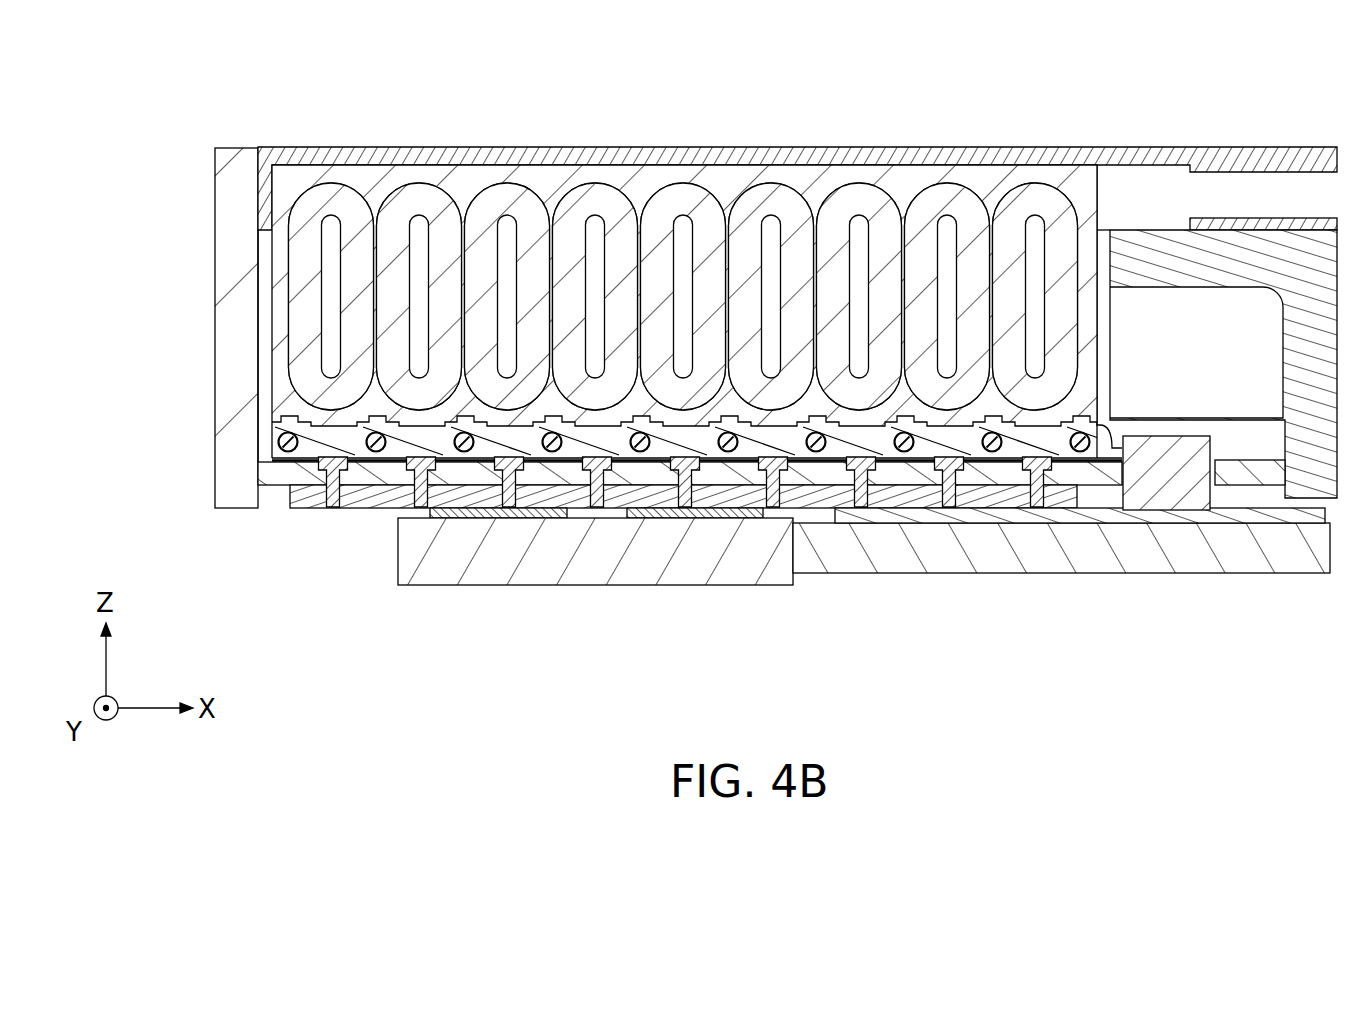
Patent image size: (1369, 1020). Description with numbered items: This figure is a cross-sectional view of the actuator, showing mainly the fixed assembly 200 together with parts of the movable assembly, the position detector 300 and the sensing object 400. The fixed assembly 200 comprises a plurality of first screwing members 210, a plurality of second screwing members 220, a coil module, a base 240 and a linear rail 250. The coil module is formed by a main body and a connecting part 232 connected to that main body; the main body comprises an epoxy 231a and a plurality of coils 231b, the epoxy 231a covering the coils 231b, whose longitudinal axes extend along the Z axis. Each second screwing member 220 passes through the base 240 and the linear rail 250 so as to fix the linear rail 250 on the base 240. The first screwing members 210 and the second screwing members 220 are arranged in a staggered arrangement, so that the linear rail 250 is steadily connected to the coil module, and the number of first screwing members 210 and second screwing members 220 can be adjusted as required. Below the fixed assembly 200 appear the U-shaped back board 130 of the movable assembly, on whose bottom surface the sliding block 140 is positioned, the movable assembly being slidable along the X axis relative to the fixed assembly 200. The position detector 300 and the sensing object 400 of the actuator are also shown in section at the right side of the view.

The U-shaped back board 130 is at (597, 563).
The sliding block 140 is at (500, 518).
The fixed assembly 200 is at (215, 148).
The first screwing member 210 is at (278, 442).
The second screwing member 220 is at (335, 507).
The epoxy 231a is at (636, 185).
The coil 231b is at (330, 205).
The connecting part 232 is at (1053, 440).
The base 240 is at (987, 470).
The linear rail 250 is at (903, 493).
The position detector 300 is at (1167, 475).
The sensing object 400 is at (1253, 517).